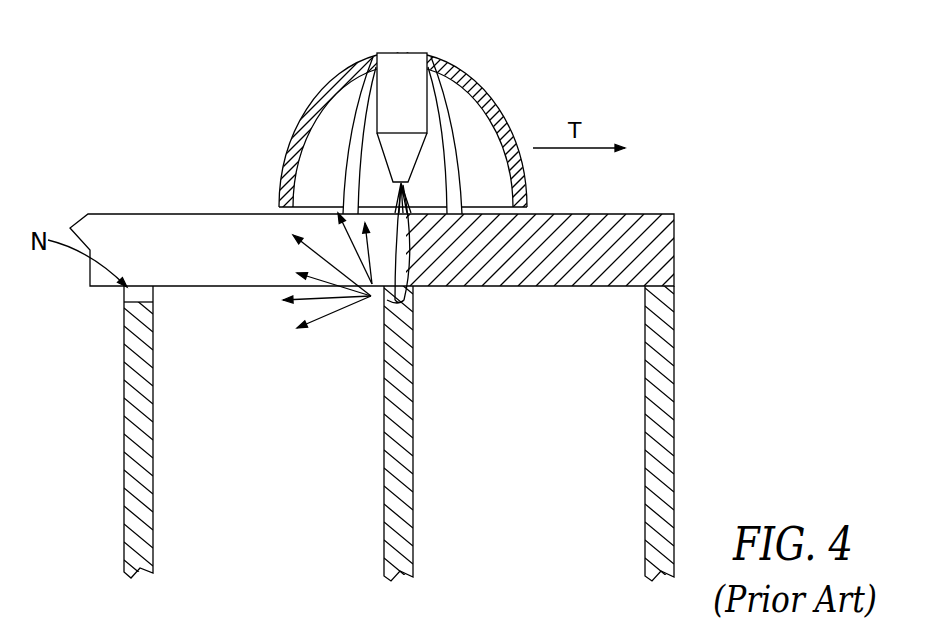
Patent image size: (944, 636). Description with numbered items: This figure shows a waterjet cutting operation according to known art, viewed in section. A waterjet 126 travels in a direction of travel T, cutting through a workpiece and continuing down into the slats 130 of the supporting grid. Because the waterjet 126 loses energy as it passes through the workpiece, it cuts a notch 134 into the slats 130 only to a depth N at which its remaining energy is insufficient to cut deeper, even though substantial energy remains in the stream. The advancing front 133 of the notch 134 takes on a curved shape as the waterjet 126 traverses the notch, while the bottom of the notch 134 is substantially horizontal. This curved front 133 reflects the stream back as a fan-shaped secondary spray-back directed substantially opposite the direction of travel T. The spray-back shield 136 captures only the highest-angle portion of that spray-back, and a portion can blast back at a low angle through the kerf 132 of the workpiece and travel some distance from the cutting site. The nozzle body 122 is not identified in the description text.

The nozzle body 122 is at (400, 72).
The waterjet 126 is at (396, 200).
The slats 130 is at (140, 446).
The kerf 132 is at (226, 258).
The advancing front of the notch 133 is at (390, 293).
The notch 134 is at (150, 295).
The spray-back shield 136 is at (308, 135).